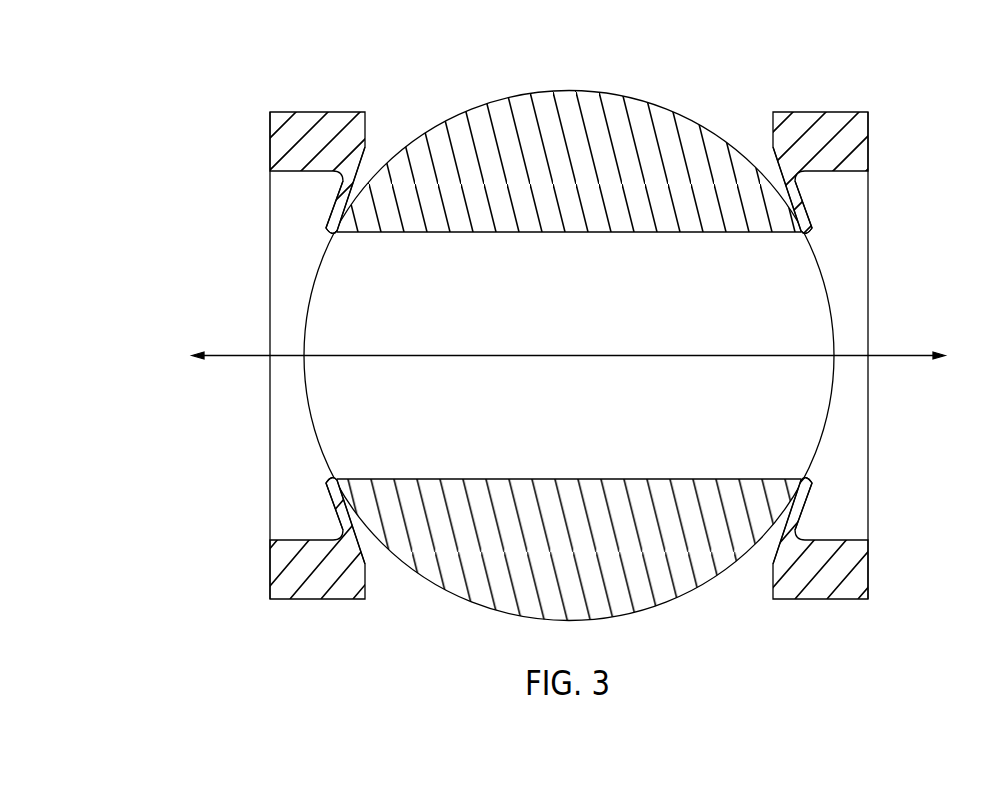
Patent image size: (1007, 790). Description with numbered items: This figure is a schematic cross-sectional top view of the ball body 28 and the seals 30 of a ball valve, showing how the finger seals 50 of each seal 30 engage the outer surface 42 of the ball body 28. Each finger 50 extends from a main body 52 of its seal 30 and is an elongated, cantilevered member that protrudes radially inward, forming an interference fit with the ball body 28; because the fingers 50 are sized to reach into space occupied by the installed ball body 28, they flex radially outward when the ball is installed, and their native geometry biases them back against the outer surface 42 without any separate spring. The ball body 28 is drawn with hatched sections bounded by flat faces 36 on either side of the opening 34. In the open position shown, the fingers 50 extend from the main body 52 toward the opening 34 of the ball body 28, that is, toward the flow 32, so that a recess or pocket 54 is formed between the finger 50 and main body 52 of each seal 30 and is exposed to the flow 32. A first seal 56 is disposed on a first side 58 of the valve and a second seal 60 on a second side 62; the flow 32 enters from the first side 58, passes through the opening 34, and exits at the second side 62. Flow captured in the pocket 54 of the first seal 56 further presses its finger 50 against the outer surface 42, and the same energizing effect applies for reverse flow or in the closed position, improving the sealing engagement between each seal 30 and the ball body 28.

The ball body 28 is at (668, 135).
The seals 30 is at (295, 126).
The flow 32 is at (567, 357).
The opening 34 is at (558, 305).
The flat face of ball 36 is at (450, 236).
The outer surface 42 is at (481, 105).
The finger seal 50 is at (340, 208).
The main body 52 is at (350, 133).
The recess or pocket 54 is at (288, 203).
The first seal 56 is at (297, 154).
The first side 58 is at (218, 170).
The second seal 60 is at (840, 140).
The second side 62 is at (907, 188).